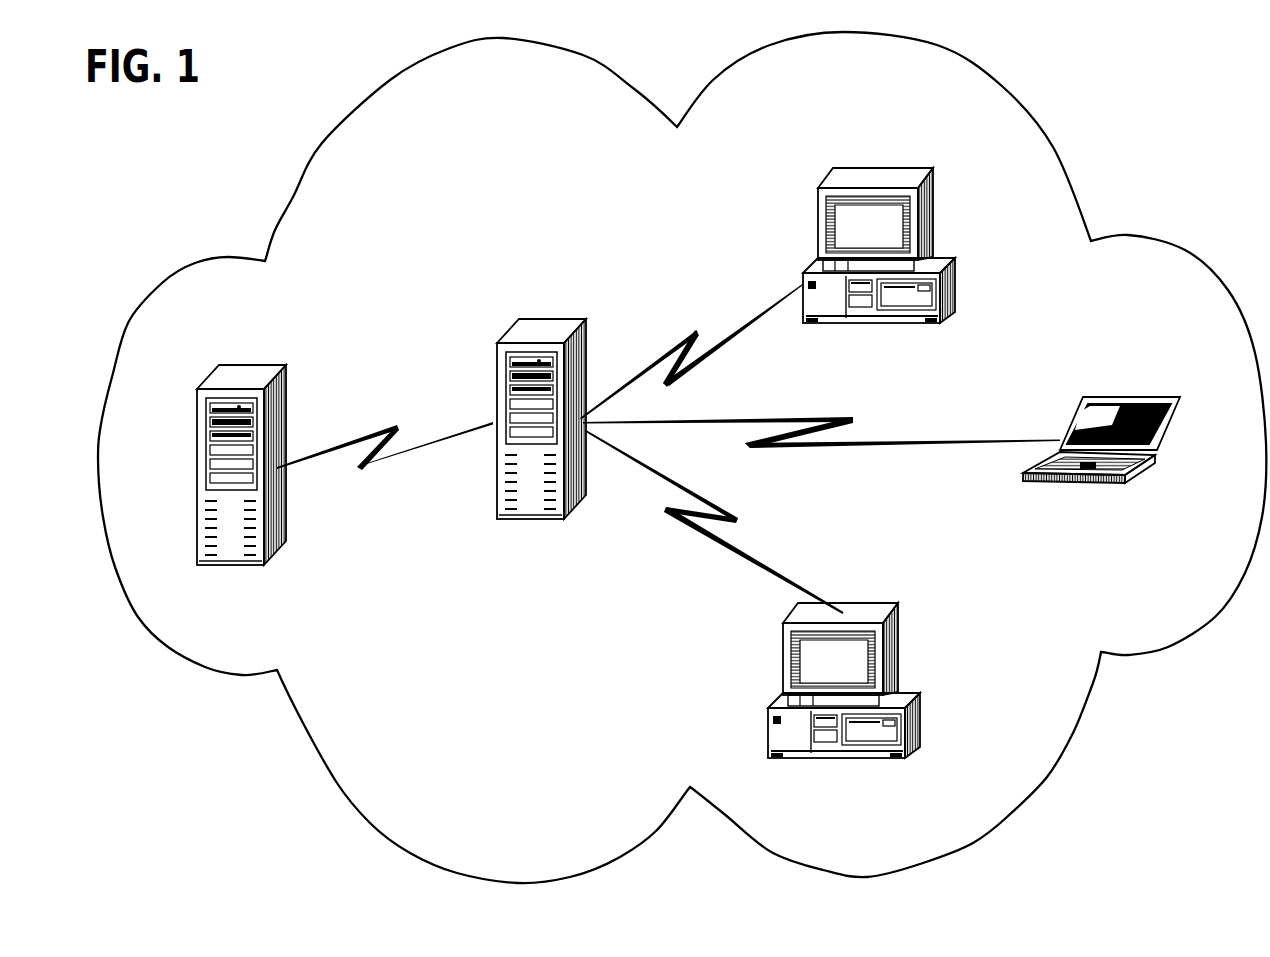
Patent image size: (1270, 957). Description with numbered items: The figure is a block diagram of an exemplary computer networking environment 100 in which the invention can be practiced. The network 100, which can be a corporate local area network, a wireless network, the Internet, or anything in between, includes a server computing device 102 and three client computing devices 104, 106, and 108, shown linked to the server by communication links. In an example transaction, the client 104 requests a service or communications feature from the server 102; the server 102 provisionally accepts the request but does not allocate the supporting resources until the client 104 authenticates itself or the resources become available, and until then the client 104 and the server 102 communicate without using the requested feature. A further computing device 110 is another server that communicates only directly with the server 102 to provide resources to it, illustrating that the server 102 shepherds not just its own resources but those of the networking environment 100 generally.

The computer networking environment 100 is at (818, 80).
The server computing device 102 is at (541, 440).
The client computing device 104 is at (892, 240).
The client computing device 106 is at (1101, 455).
The client computing device 108 is at (857, 675).
The computing device 110 is at (241, 483).